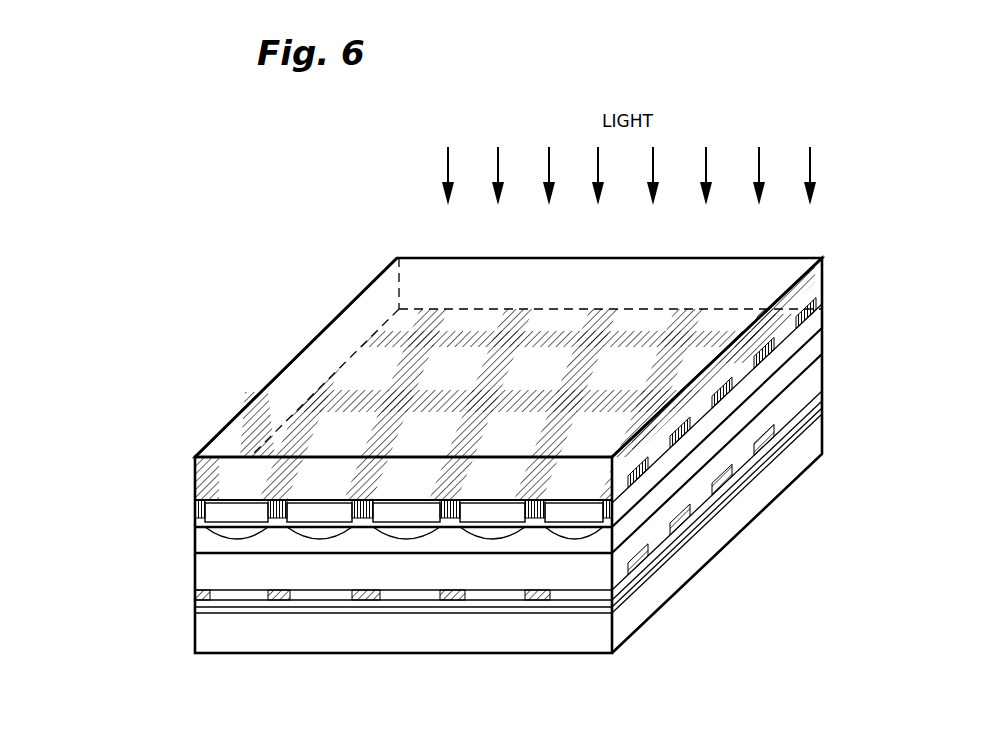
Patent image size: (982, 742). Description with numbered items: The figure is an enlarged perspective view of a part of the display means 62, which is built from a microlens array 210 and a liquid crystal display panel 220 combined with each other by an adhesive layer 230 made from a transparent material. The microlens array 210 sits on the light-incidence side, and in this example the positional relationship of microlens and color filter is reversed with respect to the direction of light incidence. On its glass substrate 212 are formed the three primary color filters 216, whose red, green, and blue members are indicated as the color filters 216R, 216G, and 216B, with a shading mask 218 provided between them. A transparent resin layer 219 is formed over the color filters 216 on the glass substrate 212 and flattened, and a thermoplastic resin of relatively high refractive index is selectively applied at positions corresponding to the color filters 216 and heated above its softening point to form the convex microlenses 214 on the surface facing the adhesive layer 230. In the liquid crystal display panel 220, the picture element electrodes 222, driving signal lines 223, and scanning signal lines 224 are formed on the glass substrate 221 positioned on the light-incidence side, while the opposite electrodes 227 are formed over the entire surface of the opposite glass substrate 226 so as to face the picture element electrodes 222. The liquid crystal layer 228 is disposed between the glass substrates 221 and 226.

The display means 62 is at (318, 260).
The glass substrate 212 is at (430, 268).
The microlens array 210 is at (840, 252).
The adhesive layer 230 is at (790, 363).
The color filters 216 is at (98, 355).
The red color filter 216R is at (240, 492).
The green color filter 216G is at (318, 490).
The blue color filter 216B is at (410, 487).
The transparent resin layer 219 is at (197, 512).
The shading mask 218 is at (450, 517).
The microlenses 214 is at (300, 549).
The glass substrate 221 is at (206, 575).
The picture element electrodes 222 is at (417, 600).
The driving signal lines 223 is at (453, 600).
The scanning signal lines 224 is at (773, 443).
The liquid crystal display panel 220 is at (840, 365).
The opposite electrodes 227 is at (668, 563).
The liquid crystal layer 228 is at (633, 590).
The opposite glass substrate 226 is at (208, 630).